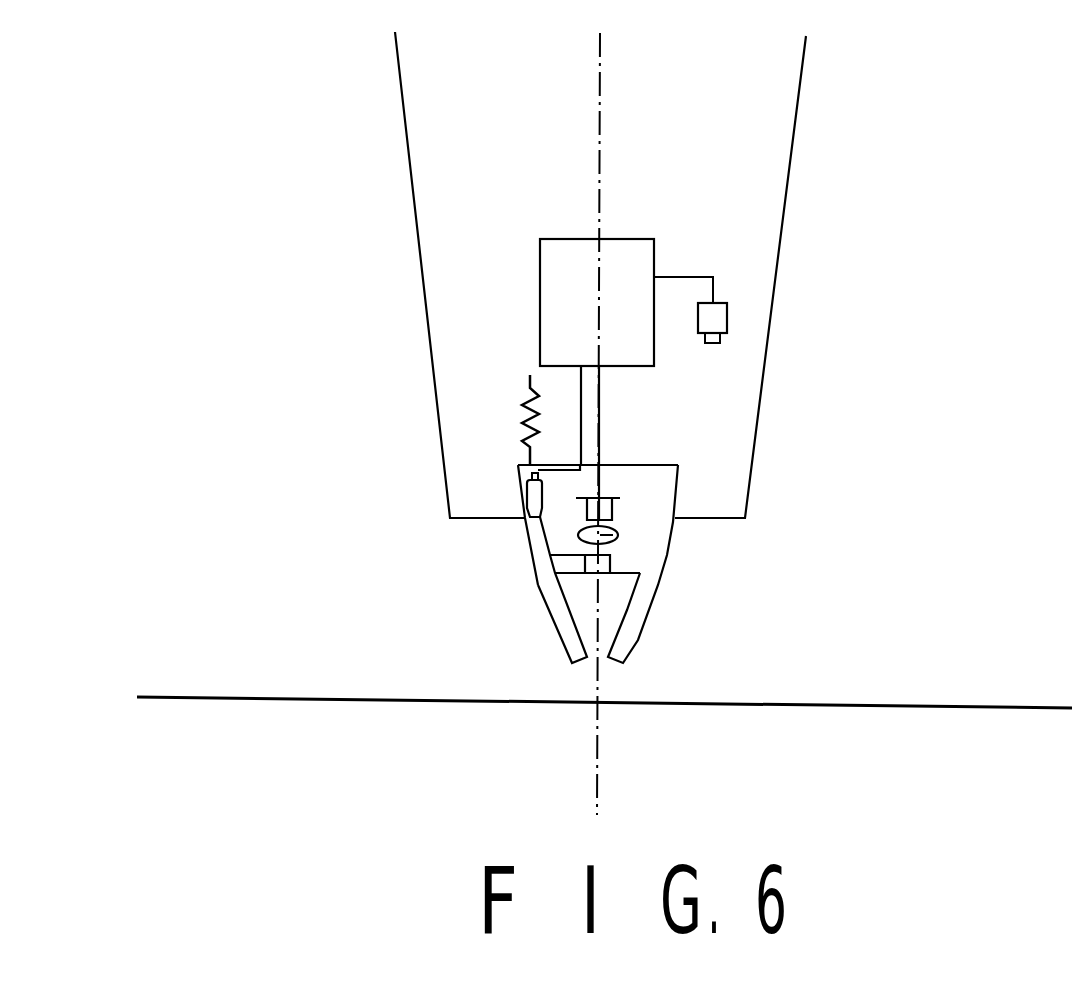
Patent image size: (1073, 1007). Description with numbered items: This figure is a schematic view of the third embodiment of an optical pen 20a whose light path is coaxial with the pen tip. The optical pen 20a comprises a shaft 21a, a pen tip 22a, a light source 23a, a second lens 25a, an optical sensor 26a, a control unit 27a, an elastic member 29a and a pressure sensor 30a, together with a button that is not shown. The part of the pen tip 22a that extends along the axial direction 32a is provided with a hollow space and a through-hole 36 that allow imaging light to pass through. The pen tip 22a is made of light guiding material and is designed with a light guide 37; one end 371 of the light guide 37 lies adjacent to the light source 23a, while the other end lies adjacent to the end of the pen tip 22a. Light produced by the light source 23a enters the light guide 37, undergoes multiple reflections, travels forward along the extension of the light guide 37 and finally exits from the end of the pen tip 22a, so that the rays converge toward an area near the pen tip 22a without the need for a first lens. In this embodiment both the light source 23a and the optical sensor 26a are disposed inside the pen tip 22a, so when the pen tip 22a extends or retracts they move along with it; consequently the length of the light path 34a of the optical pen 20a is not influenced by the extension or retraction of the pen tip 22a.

The optical pen 20a is at (300, 215).
The shaft 21a is at (508, 275).
The pen tip 22a is at (457, 614).
The light source 23a is at (425, 525).
The second lens 25a is at (738, 529).
The optical sensor 26a is at (766, 485).
The control unit 27a is at (728, 260).
The elastic member 29a is at (405, 393).
The pressure sensor 30a is at (829, 315).
The axial direction 32a is at (737, 433).
The light path 34a is at (650, 564).
The through-hole 36 is at (701, 569).
The light guide 37 is at (449, 570).
The one end of the light guide 371 is at (738, 455).